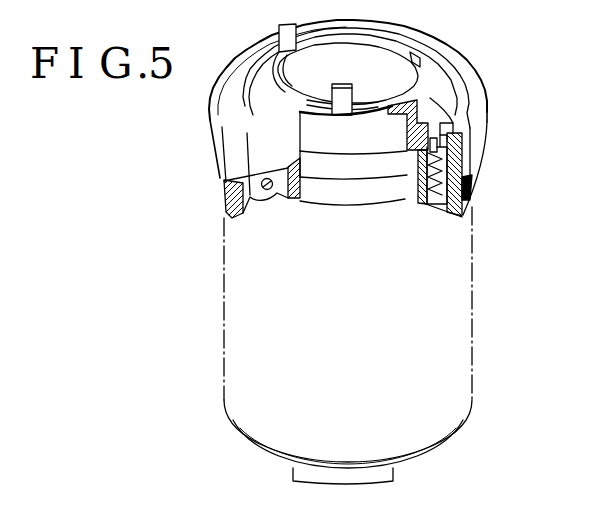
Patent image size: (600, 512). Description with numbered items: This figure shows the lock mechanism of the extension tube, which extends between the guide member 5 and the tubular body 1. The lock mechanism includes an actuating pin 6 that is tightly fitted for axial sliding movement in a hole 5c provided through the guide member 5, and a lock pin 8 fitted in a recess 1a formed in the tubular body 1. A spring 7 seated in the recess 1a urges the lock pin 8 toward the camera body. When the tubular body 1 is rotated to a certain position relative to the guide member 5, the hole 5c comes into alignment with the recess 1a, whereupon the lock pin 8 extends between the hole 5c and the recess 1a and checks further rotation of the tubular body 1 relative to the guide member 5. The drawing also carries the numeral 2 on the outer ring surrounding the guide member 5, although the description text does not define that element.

The tubular body 1 is at (450, 216).
The recess 1a is at (425, 205).
The cap ring 2 is at (488, 124).
The guide member 5 is at (413, 163).
The hole 5c is at (443, 161).
The actuating pin 6 is at (453, 123).
The spring 7 is at (470, 197).
The lock pin 8 is at (442, 171).